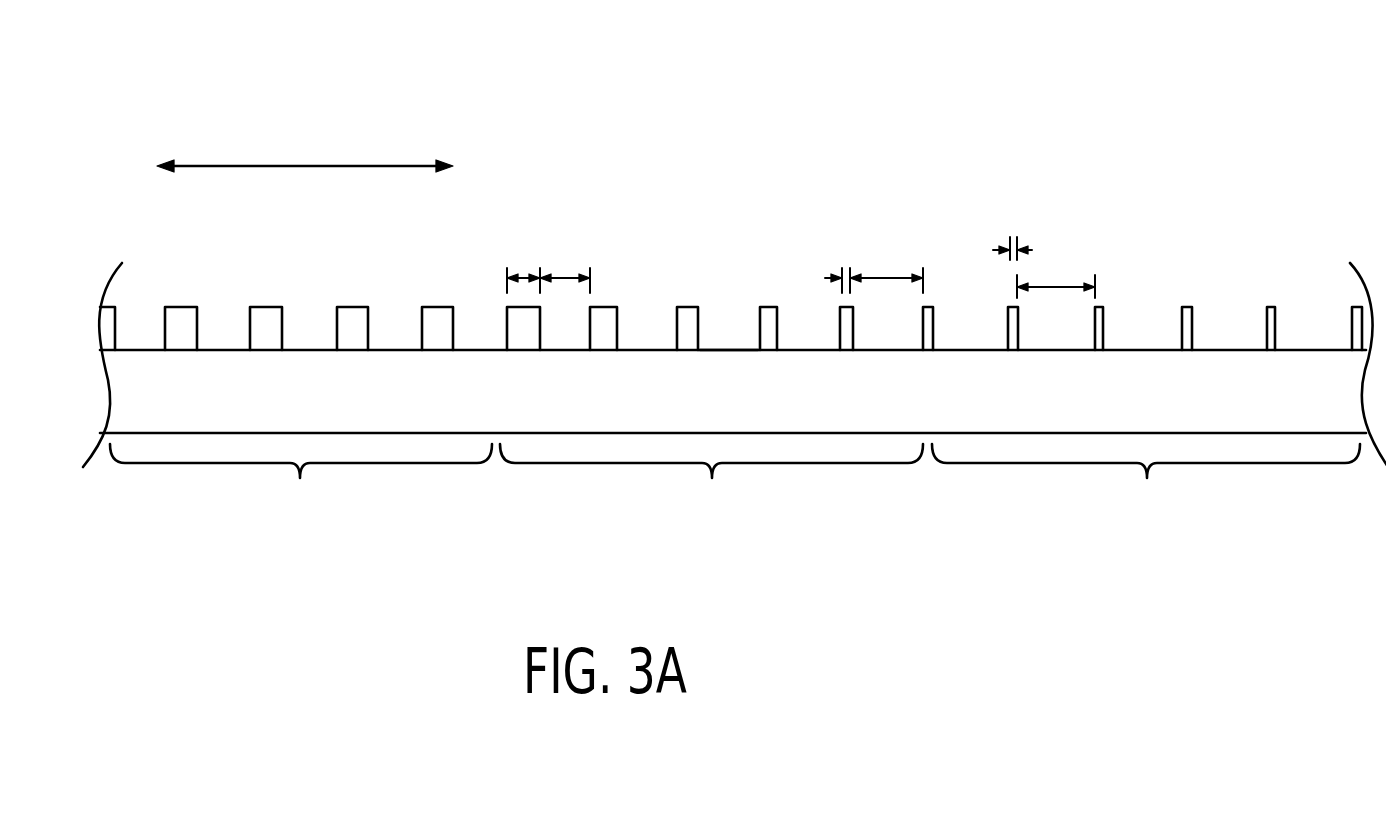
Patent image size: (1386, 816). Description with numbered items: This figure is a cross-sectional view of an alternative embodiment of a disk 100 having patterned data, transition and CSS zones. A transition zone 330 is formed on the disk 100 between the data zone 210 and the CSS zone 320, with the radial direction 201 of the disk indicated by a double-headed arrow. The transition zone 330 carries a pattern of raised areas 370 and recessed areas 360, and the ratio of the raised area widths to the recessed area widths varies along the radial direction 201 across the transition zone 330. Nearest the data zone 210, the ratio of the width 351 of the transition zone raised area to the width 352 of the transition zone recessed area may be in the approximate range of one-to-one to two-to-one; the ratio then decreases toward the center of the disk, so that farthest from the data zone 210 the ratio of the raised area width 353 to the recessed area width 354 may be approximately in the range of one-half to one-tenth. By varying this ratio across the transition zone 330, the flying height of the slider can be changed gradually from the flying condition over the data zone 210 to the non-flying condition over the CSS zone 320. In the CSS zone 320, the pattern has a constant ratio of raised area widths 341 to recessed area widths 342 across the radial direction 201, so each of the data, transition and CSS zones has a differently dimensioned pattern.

The disk 100 is at (796, 93).
The radial direction 201 is at (305, 113).
The data zone 210 is at (296, 433).
The CSS zone 320 is at (1147, 433).
The transition zone 330 is at (716, 433).
The raised area width 341 is at (1015, 233).
The recessed area width 342 is at (1060, 282).
The width of the transition zone raised area 351 is at (529, 267).
The width of the transition zone recessed area 352 is at (577, 270).
The transition zone raised area width 353 is at (845, 265).
The recessed area width 354 is at (890, 272).
The recessed areas 360 is at (723, 327).
The raised areas 370 is at (683, 292).